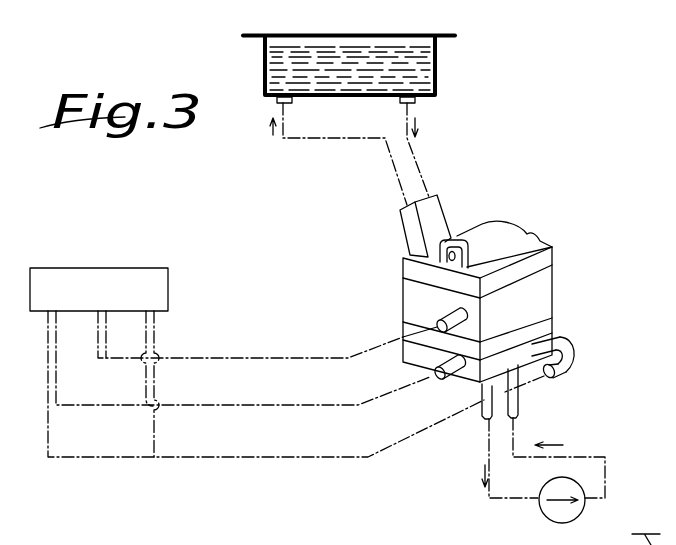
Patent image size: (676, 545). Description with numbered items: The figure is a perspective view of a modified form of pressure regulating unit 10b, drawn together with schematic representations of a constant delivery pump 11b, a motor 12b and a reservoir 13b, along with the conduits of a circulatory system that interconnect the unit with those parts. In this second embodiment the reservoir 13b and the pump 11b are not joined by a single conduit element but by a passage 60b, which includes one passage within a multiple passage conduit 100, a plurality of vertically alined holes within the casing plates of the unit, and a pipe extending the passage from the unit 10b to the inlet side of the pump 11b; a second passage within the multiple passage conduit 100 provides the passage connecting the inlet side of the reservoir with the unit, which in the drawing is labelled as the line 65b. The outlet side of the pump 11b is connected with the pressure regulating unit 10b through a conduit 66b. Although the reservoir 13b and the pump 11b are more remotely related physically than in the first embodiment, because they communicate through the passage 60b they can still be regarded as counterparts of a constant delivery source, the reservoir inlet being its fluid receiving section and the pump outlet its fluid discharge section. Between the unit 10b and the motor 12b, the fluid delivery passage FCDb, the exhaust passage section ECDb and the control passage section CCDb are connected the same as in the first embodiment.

The reservoir 13b is at (437, 72).
The return line 65b is at (342, 140).
The passage 60b is at (417, 165).
The multiple passage conduit 100 is at (407, 228).
The pressure regulating unit 10b is at (553, 285).
The motor 12b is at (115, 270).
The control passage section CCDb is at (105, 340).
The exhaust passage section ECDb is at (127, 404).
The fluid delivery passage FCDb is at (157, 434).
The conduit 66b is at (513, 435).
The pump 11b is at (543, 513).